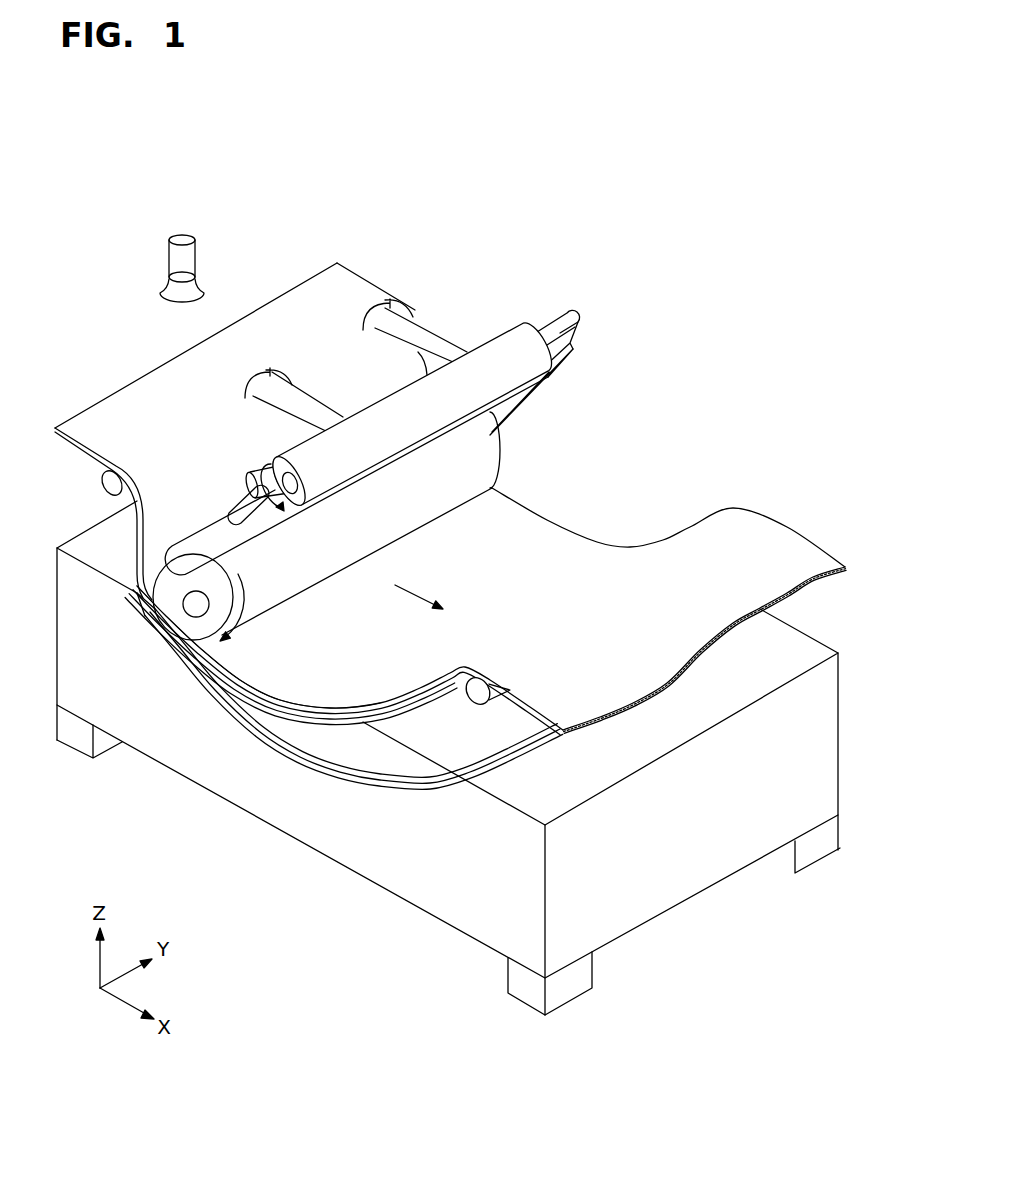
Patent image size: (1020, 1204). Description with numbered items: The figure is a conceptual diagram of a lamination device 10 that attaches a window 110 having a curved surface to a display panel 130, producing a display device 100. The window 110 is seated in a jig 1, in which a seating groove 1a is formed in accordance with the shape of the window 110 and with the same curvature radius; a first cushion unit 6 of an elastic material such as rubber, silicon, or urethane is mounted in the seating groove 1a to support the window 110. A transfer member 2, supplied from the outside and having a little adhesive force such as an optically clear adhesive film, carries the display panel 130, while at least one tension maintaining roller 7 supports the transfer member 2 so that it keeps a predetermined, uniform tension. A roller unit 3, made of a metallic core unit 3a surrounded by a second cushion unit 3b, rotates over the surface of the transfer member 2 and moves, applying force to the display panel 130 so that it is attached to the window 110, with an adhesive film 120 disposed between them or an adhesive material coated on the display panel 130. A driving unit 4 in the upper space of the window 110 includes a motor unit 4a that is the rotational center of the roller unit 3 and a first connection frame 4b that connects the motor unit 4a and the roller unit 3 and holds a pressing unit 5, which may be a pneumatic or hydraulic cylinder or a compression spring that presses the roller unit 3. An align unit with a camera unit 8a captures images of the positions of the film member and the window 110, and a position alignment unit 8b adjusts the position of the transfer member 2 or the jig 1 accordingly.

The jig 1 is at (632, 885).
The seating groove 1a is at (430, 793).
The transfer member 2 is at (792, 545).
The roller unit 3 is at (215, 437).
The core unit 3a is at (183, 553).
The second cushion unit 3b is at (165, 572).
The driving unit 4 is at (578, 272).
The motor unit 4a is at (490, 352).
The first connection frame 4b is at (550, 336).
The pressing unit 5 is at (220, 501).
The first cushion unit 6 is at (413, 790).
The tension maintaining roller 7 is at (478, 692).
The camera unit 8a is at (182, 240).
The position alignment unit 8b is at (580, 979).
The lamination device 10 is at (706, 255).
The display device 100 is at (183, 860).
The window 110 is at (257, 727).
The adhesive film 120 is at (303, 717).
The display panel 130 is at (333, 717).